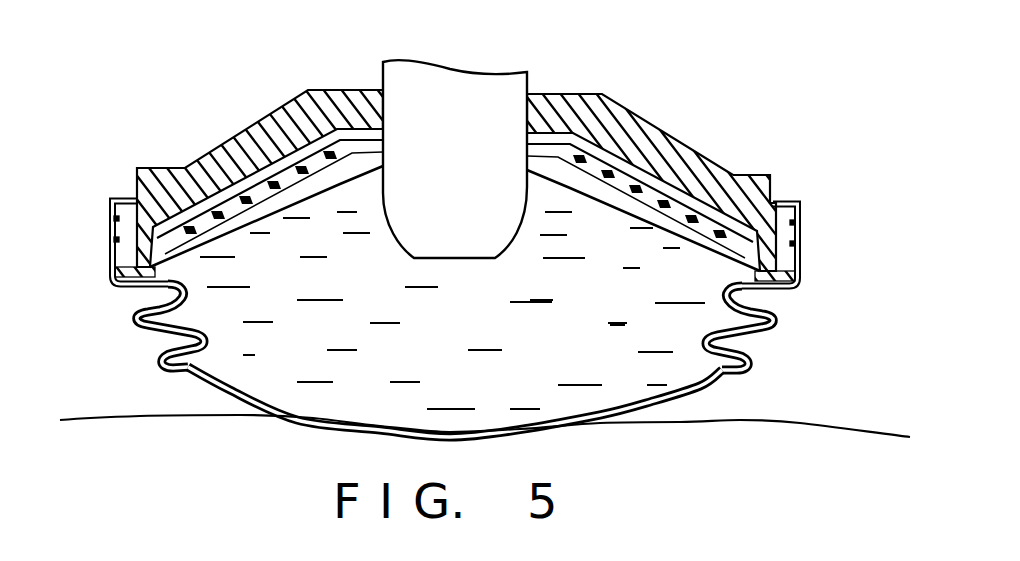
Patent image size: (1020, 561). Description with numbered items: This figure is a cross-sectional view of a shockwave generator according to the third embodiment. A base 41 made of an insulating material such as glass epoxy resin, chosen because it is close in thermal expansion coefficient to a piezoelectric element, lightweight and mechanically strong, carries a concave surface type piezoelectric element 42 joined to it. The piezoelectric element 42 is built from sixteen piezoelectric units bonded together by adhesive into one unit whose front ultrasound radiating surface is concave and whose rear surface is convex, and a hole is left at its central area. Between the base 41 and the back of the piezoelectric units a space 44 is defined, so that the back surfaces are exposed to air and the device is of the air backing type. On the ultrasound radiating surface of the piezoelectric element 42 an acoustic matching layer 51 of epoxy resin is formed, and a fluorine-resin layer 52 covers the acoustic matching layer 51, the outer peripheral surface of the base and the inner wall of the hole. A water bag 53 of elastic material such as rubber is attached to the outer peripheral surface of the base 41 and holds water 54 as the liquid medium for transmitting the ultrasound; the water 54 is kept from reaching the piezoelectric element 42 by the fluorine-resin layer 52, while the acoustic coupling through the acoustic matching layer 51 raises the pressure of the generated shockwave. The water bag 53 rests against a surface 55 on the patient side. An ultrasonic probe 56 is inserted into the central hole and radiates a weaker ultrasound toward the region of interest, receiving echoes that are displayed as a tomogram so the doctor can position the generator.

The base 41 is at (750, 183).
The concave surface type piezoelectric element 42 is at (663, 190).
The space 44 is at (573, 130).
The acoustic matching layer 51 is at (785, 252).
The fluorine-resin layer 52 is at (783, 290).
The water bag 53 is at (190, 371).
The water 54 is at (200, 310).
The base surface 55 is at (872, 440).
The ultrasonic probe 56 is at (490, 90).